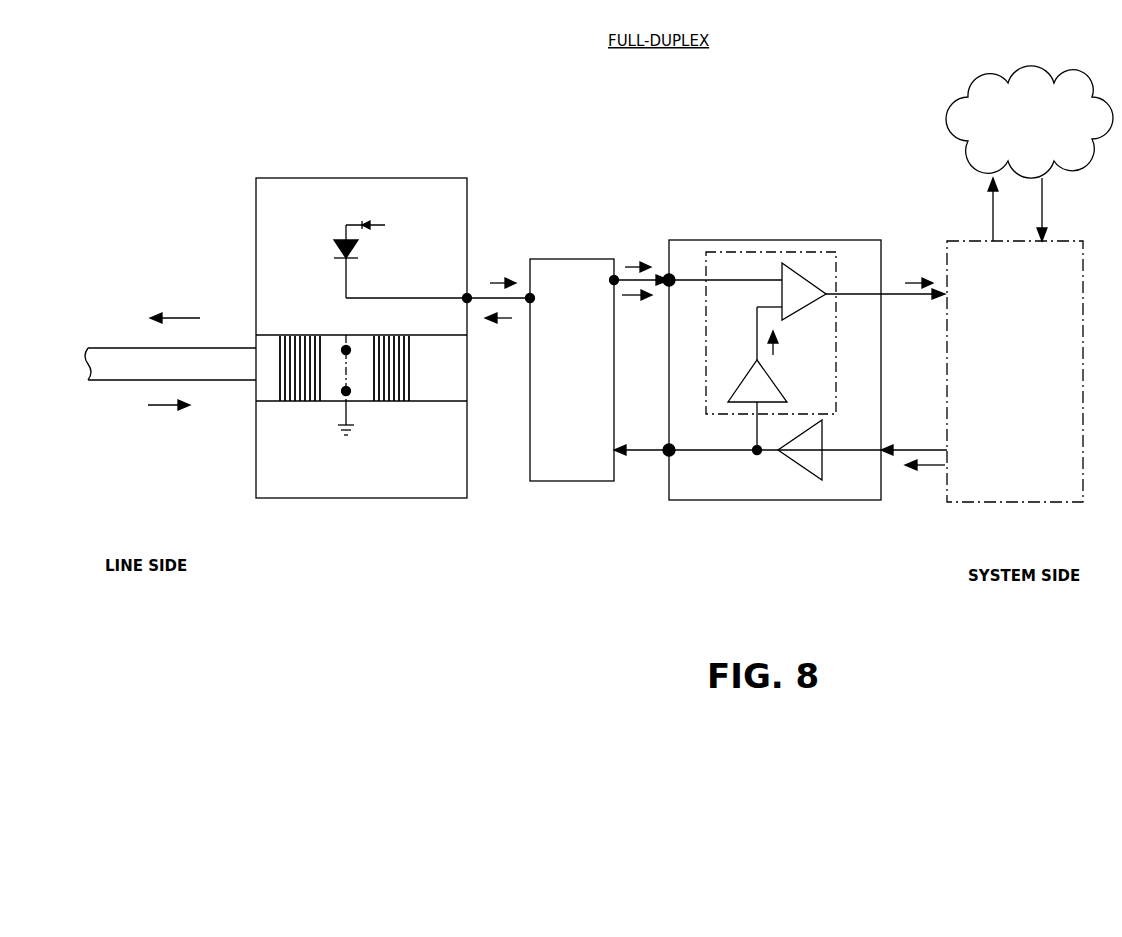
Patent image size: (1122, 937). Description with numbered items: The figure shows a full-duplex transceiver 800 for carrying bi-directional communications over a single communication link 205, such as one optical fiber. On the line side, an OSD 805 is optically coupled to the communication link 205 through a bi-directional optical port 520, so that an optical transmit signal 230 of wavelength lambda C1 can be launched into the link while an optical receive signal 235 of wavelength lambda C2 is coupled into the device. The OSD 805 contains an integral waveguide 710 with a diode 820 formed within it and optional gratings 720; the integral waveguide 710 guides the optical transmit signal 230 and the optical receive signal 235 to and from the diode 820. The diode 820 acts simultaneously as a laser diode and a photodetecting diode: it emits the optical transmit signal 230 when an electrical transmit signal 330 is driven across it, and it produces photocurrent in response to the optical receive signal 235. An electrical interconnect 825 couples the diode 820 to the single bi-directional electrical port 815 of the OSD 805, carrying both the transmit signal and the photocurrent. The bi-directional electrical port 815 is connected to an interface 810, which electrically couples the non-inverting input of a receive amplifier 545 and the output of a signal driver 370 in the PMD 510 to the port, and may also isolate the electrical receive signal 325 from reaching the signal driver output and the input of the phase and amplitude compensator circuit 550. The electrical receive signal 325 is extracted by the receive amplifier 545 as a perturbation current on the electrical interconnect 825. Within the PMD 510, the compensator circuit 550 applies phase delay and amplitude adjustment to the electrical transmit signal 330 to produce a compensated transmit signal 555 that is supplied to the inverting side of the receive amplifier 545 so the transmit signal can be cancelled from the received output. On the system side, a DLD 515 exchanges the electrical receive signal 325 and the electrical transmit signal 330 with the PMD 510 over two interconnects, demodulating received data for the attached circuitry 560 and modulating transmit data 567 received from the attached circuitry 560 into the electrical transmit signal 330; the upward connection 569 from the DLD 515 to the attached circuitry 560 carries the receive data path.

The full-duplex transceiver 800 is at (250, 74).
The communication link 205 is at (105, 378).
The optical transmit signal 230 is at (190, 314).
The optical receive signal 235 is at (148, 410).
The OSD 805 is at (361, 322).
The grating 720 is at (296, 403).
The diode 820 is at (354, 396).
The electrical interconnect 825 is at (372, 296).
The bi-directional optical port 520 is at (256, 340).
The integral waveguide 710 is at (266, 393).
The bi-directional electrical port 815 is at (468, 298).
The electrical receive signal 325 is at (499, 277).
The electrical transmit signal 330 is at (498, 330).
The interface 810 is at (598, 354).
The PMD 510 is at (805, 354).
The receive amplifier 545 is at (798, 276).
The compensated transmit signal 555 is at (772, 352).
The phase and amplitude compensator circuit 550 is at (740, 386).
The signal driver 370 is at (797, 456).
The DLD 515 is at (1015, 371).
The attached circuitry 560 is at (1063, 86).
The uplink connection 569 is at (990, 208).
The transmit data 567 is at (1042, 208).